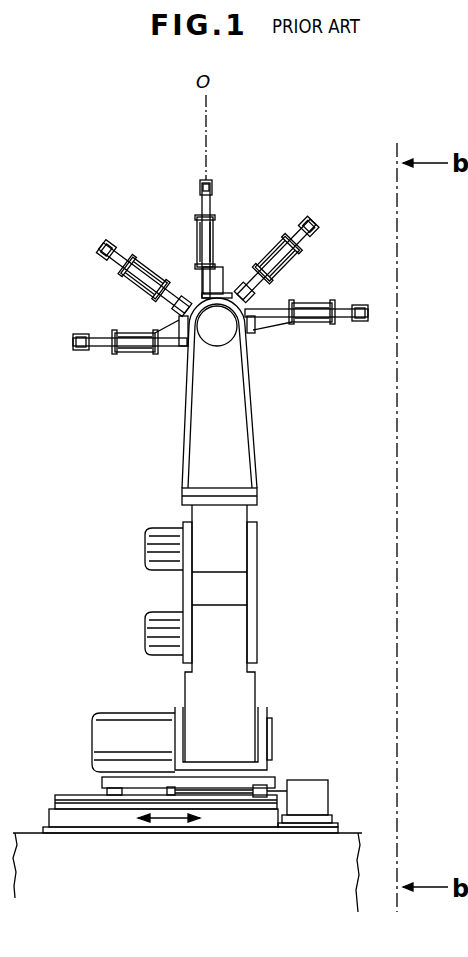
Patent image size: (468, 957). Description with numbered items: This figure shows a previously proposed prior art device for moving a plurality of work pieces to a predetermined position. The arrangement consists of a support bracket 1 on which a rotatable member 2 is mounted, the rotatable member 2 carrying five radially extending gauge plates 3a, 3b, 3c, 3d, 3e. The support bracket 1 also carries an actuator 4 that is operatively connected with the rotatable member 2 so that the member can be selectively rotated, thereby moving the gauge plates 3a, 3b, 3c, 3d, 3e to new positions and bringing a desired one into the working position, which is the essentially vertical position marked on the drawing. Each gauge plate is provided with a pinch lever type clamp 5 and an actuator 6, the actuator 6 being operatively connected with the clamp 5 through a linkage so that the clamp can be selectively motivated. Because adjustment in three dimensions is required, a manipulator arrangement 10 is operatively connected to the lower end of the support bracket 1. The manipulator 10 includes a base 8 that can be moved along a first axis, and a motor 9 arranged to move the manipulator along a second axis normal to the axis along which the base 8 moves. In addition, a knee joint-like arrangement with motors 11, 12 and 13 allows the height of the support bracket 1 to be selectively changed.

The support bracket 1 is at (198, 452).
The rotatable member 2 is at (260, 332).
The gauge plate 3a is at (97, 347).
The gauge plate 3b is at (110, 265).
The gauge plate 3c is at (202, 207).
The gauge plate 3d is at (304, 238).
The gauge plate 3e is at (338, 320).
The actuator 4 is at (218, 348).
The pinch lever type clamp 5 is at (208, 183).
The actuator 6 is at (197, 240).
The base 8 is at (40, 826).
The motor 9 is at (308, 779).
The manipulator arrangement 10 is at (258, 587).
The motor 11 is at (152, 526).
The motor 12 is at (156, 612).
The motor 13 is at (132, 712).